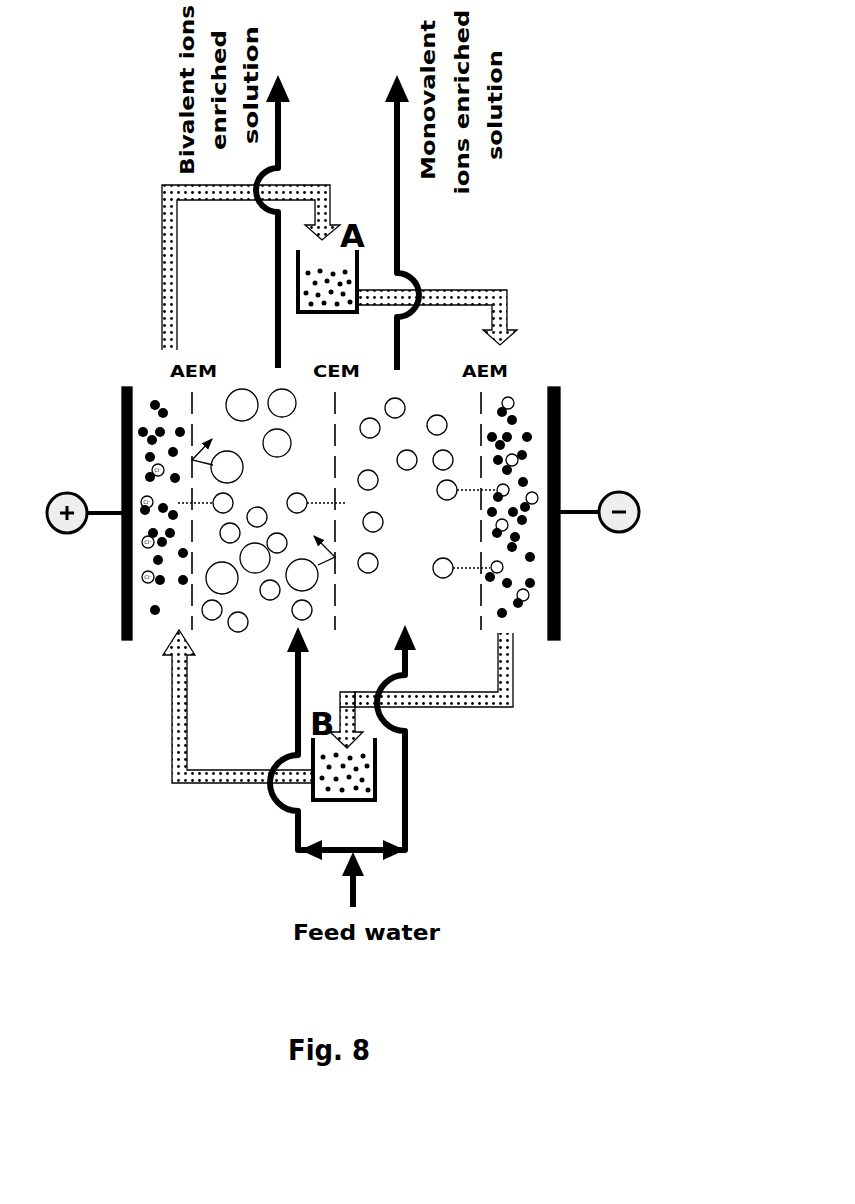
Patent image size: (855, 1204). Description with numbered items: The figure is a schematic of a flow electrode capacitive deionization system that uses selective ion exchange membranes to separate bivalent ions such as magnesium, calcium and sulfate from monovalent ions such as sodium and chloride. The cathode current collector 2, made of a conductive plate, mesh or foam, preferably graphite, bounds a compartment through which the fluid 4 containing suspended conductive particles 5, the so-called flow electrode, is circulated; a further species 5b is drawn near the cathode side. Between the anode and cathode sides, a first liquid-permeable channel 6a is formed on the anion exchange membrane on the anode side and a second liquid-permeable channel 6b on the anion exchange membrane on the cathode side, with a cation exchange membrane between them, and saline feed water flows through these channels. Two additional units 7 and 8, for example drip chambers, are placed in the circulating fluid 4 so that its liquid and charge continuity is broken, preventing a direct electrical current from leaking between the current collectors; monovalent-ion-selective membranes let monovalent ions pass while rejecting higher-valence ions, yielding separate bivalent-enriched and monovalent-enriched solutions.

The second current collector 2 is at (122, 384).
The fluid 4 is at (307, 193).
The suspended conductive particles 5 is at (536, 437).
The monovalent anions (chloride) 5b is at (530, 601).
The first liquid-permeable channel 6a is at (256, 641).
The second liquid-permeable channel 6b is at (439, 617).
The additional unit 7 is at (350, 788).
The additional unit 8 is at (319, 294).